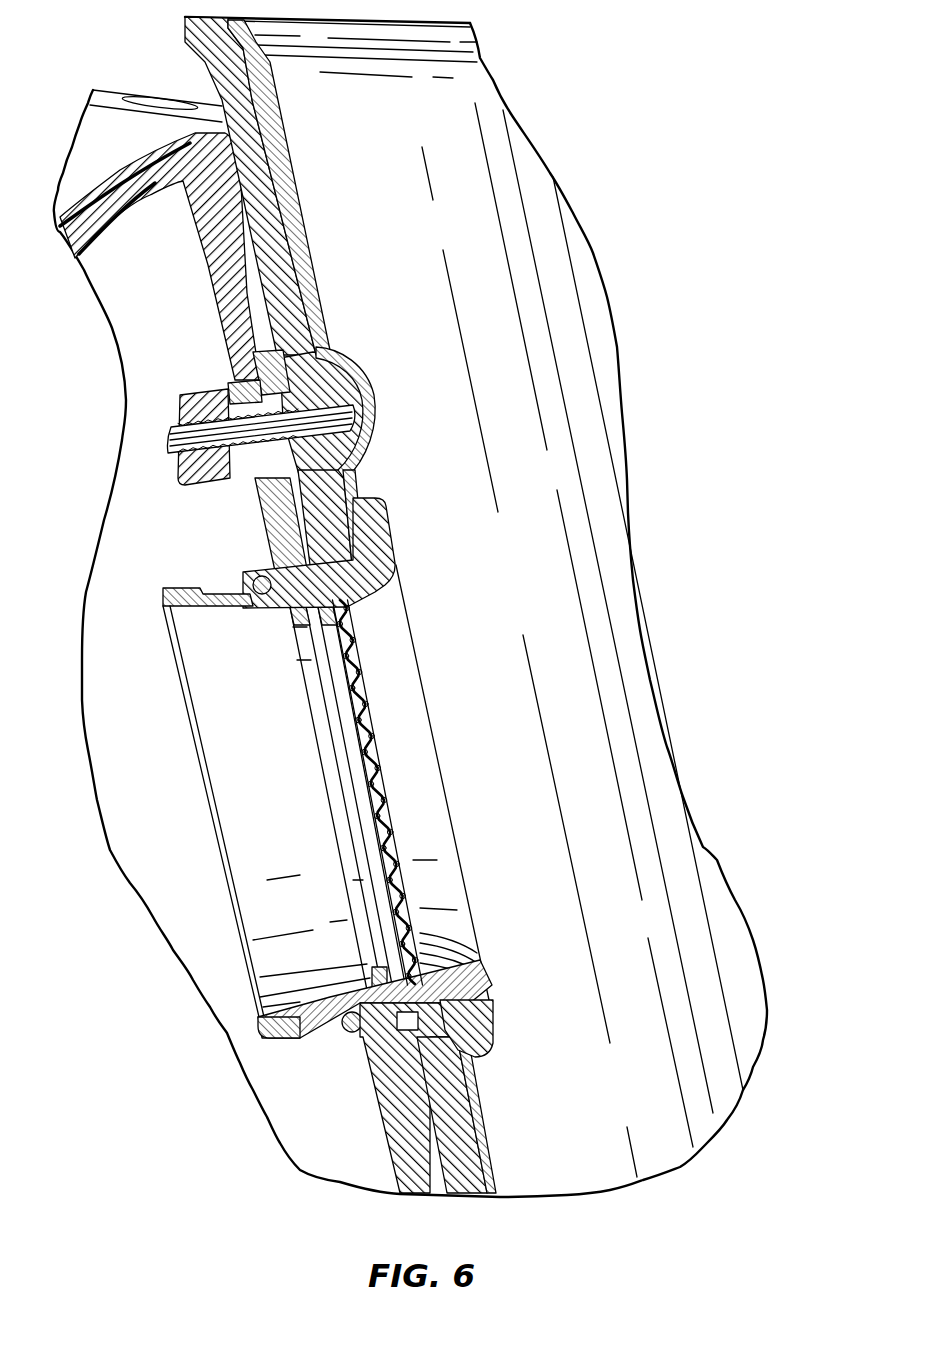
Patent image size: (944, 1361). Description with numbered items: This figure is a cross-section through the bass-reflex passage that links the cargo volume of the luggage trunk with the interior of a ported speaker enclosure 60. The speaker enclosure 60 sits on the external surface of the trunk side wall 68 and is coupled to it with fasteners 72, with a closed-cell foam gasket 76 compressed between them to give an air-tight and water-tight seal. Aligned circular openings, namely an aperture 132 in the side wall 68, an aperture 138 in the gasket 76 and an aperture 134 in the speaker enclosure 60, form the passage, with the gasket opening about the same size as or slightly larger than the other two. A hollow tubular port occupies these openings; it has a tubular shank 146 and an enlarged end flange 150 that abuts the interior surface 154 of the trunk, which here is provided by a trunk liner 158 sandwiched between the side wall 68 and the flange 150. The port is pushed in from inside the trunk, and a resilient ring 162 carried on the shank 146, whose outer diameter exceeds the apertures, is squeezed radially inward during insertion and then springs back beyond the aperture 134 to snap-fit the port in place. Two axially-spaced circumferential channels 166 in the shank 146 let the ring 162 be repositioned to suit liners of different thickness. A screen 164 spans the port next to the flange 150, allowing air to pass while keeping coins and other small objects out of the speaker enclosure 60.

The speaker enclosure 60 is at (230, 283).
The side wall 68 is at (473, 1157).
The fastener 72 is at (337, 417).
The gasket 76 is at (257, 352).
The aperture 132 is at (473, 1058).
The aperture 134 is at (373, 1050).
The aperture 138 is at (473, 1093).
The tubular shank 146 is at (285, 1037).
The enlarged end flange 150 is at (392, 530).
The interior surface 154 is at (308, 293).
The trunk liner 158 is at (292, 210).
The resilient ring 162 is at (256, 577).
The screen 164 is at (380, 767).
The channel 166 is at (243, 596).